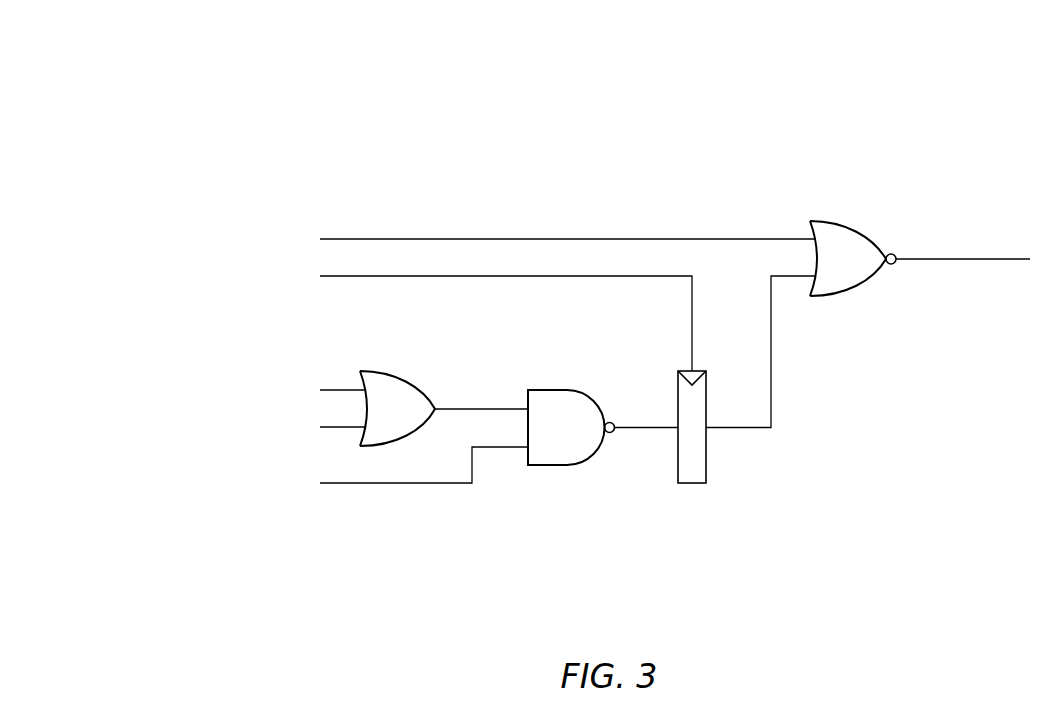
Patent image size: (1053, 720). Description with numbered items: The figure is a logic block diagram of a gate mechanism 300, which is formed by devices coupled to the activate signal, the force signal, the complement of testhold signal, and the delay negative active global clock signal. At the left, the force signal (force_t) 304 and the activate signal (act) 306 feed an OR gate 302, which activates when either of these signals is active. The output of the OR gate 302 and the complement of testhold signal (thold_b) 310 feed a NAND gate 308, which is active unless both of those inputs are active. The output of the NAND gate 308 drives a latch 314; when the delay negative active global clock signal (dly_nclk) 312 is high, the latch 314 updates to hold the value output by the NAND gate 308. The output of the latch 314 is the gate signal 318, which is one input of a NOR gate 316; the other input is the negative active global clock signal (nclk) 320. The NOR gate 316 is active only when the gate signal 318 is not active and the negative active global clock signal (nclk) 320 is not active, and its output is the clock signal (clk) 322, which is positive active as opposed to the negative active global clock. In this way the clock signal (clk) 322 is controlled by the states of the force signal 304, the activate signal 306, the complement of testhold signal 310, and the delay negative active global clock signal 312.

The gate mechanism 300 is at (252, 111).
The OR gate 302 is at (388, 373).
The force signal (force_t) 304 is at (226, 387).
The activate signal (act) 306 is at (226, 423).
The NAND gate 308 is at (556, 385).
The complement of testhold signal (thold_b) 310 is at (226, 475).
The delay negative active global clock signal (dly_nclk) 312 is at (226, 273).
The latch 314 is at (689, 482).
The NOR gate 316 is at (852, 230).
The gate signal 318 is at (734, 423).
The negative active global clock signal (nclk) 320 is at (226, 236).
The clock signal (clk) 322 is at (959, 255).